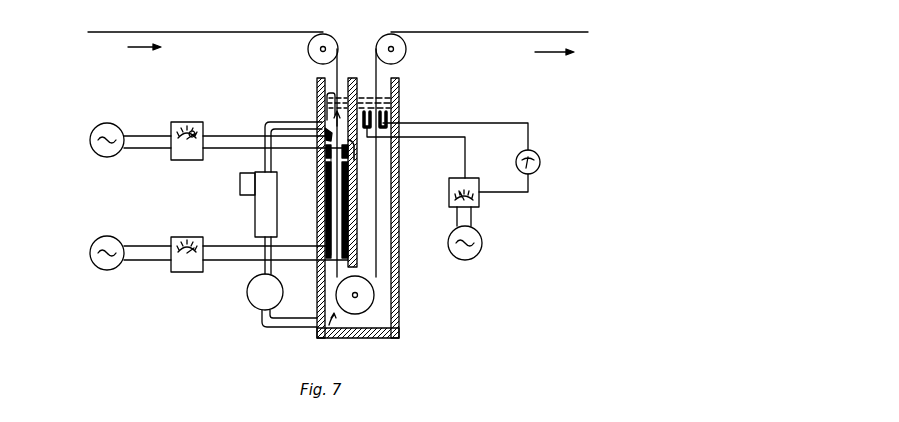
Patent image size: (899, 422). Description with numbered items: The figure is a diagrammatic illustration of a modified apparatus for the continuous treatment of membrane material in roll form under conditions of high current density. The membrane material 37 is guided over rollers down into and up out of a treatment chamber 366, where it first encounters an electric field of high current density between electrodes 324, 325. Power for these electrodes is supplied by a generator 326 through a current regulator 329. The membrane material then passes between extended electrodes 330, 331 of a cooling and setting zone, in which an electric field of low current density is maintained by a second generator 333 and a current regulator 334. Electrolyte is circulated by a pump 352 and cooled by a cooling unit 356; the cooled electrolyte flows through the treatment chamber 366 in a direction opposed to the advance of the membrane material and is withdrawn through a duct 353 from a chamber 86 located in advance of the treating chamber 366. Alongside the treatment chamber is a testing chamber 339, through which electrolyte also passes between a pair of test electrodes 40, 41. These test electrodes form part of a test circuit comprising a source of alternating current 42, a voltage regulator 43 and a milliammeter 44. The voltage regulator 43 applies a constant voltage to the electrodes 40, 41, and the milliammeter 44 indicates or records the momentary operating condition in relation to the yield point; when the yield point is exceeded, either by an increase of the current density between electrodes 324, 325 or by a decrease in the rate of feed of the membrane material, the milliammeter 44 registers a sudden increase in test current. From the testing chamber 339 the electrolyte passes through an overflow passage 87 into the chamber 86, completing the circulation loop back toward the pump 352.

The membrane material 37 is at (171, 32).
The chamber 86 is at (329, 96).
The overflow passage 87 is at (340, 105).
The test electrode 40 is at (368, 110).
The test electrode 41 is at (387, 108).
The source of alternating current 42 is at (483, 243).
The voltage regulator 43 is at (479, 202).
The milliammeter 44 is at (541, 160).
The electrode 324 is at (325, 160).
The electrode 325 is at (350, 150).
The generator 326 is at (93, 127).
The current regulator 329 is at (190, 122).
The extended electrode 330 is at (325, 221).
The extended electrode 331 is at (349, 206).
The generator 333 is at (95, 266).
The current regulator 334 is at (192, 275).
The testing chamber 339 is at (385, 281).
The pump 352 is at (253, 306).
The duct 353 is at (300, 122).
The cooling unit 356 is at (254, 204).
The treatment chamber 366 is at (330, 188).